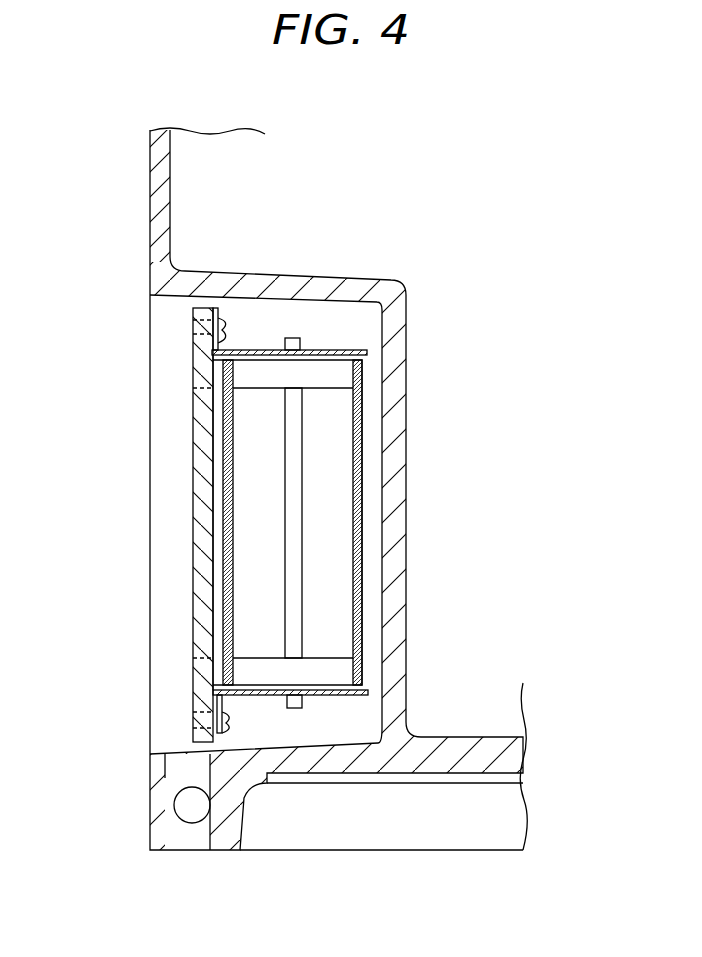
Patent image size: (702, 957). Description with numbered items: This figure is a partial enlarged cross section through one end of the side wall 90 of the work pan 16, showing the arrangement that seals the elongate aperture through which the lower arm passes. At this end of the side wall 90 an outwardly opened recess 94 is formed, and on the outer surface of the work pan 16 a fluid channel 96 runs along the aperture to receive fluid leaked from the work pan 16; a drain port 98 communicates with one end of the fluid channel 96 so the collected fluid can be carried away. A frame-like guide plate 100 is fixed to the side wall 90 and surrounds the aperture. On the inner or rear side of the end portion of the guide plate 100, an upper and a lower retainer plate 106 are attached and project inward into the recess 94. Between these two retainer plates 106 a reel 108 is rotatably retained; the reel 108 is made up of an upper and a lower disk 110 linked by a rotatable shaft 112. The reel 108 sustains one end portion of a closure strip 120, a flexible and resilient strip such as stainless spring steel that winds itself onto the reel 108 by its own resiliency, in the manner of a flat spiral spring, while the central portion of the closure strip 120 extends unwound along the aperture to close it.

The work pan 16 is at (118, 258).
The side wall 90 is at (155, 193).
The recess 94 is at (297, 302).
The fluid channel 96 is at (174, 782).
The drain port 98 is at (174, 819).
The guide plate 100 is at (198, 450).
The retainer plate 106 is at (342, 350).
The reel 108 is at (253, 370).
The disk 110 is at (343, 373).
The rotatable shaft 112 is at (297, 503).
The closure strip 120 is at (362, 552).